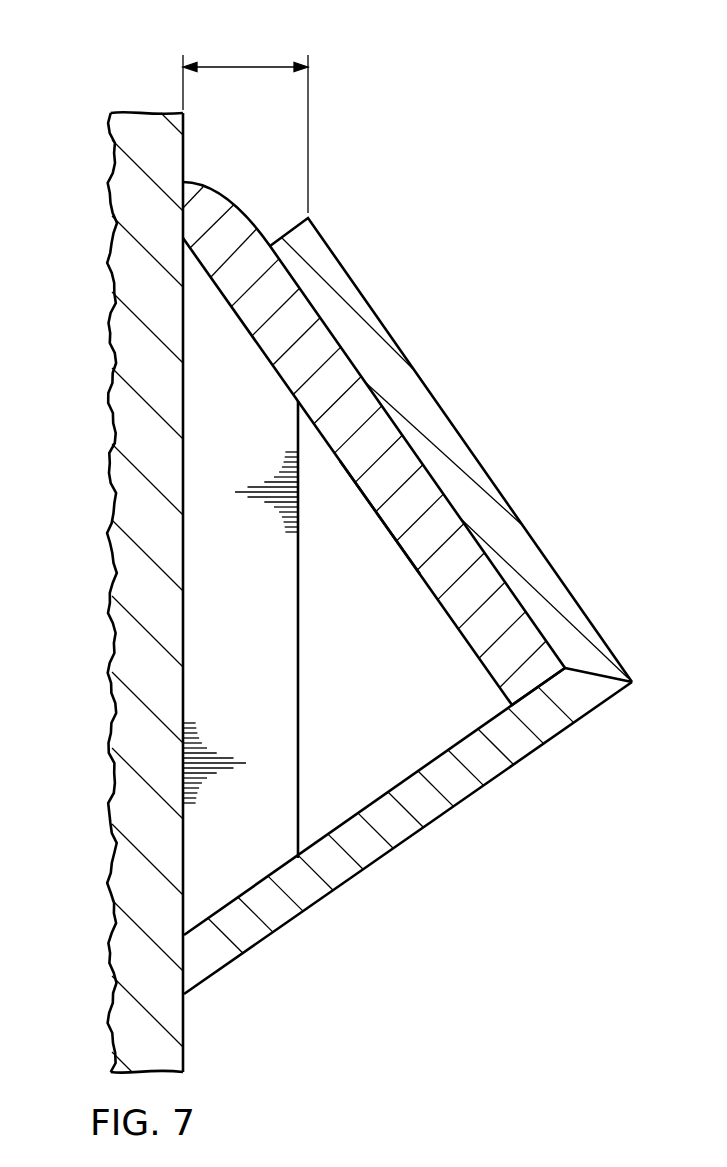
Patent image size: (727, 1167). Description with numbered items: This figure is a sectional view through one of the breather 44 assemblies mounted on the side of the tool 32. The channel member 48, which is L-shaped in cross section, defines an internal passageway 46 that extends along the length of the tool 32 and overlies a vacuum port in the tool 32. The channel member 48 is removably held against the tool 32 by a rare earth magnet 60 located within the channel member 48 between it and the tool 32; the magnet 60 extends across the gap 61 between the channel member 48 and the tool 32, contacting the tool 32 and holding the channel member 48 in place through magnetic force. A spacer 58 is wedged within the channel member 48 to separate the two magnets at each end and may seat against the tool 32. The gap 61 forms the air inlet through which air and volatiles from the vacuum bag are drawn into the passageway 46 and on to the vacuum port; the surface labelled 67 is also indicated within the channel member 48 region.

The tool 32 is at (109, 562).
The gap 61 is at (247, 64).
The magnet 60 is at (403, 462).
The channel member 48 is at (547, 572).
The breather 44 is at (480, 823).
The spacer 58 is at (291, 716).
The inner surface 67 is at (373, 515).
The passageway 46 is at (370, 673).